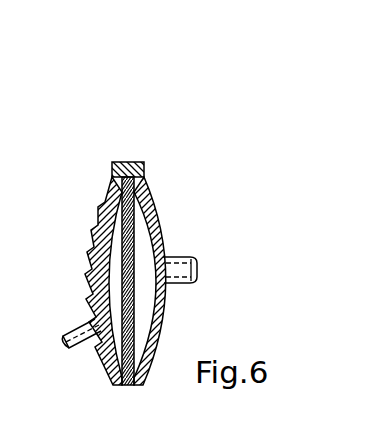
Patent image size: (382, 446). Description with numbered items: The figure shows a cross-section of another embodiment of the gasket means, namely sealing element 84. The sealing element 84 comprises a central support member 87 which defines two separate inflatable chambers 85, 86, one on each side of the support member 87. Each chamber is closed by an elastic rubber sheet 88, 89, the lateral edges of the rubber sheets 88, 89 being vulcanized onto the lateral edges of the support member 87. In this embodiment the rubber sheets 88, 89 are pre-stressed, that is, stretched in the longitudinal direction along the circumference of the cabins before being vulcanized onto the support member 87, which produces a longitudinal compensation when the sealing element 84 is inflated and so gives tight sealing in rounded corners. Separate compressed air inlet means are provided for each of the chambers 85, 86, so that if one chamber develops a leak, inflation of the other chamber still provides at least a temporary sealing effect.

The gasket means sealing element 84 is at (136, 163).
The inflatable chamber 85 is at (112, 290).
The inflatable chamber 86 is at (157, 223).
The support member 87 is at (122, 210).
The elastic rubber sheet 88 is at (103, 225).
The elastic rubber sheet 89 is at (167, 302).